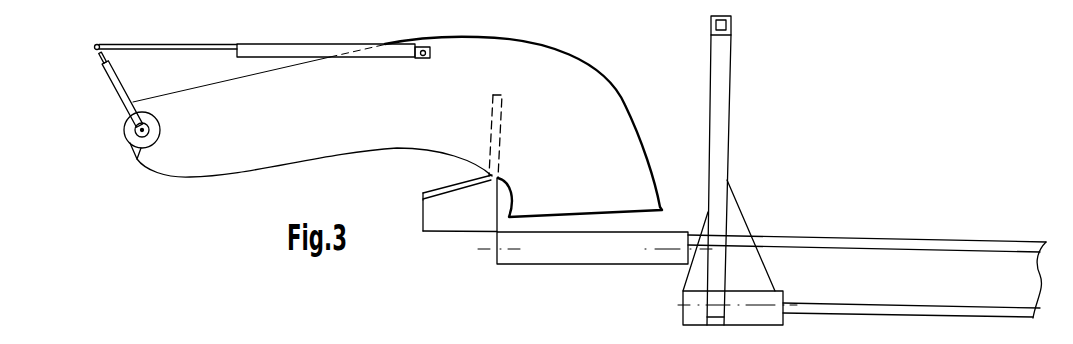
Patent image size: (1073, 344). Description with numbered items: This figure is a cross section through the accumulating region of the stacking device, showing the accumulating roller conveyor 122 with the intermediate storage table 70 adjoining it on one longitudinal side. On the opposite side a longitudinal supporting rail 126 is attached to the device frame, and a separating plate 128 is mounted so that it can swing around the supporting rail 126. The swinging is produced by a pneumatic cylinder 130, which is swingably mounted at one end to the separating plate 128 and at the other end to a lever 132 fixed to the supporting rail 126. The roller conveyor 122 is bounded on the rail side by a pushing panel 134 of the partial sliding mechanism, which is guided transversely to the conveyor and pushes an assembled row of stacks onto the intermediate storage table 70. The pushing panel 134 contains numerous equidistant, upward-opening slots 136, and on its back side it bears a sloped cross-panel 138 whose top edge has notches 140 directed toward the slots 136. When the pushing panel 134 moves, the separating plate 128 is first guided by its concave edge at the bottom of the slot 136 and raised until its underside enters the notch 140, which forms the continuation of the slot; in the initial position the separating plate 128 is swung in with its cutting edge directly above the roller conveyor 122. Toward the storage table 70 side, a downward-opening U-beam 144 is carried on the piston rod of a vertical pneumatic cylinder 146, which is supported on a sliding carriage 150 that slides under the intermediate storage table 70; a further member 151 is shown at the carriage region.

The intermediate storage table 70 is at (998, 243).
The accumulating roller conveyor 122 is at (514, 272).
The longitudinal supporting rail 126 is at (139, 153).
The separating plate 128 is at (511, 48).
The pneumatic cylinder 130 is at (291, 50).
The lever 132 is at (110, 88).
The pushing panel 134 is at (450, 238).
The slot 136 is at (503, 119).
The cross-panel 138 is at (447, 193).
The notch 140 is at (457, 179).
The U-beam 144 is at (731, 27).
The pneumatic cylinder 146 is at (725, 95).
The sliding carriage 150 is at (793, 325).
The lower rail 151 is at (978, 314).